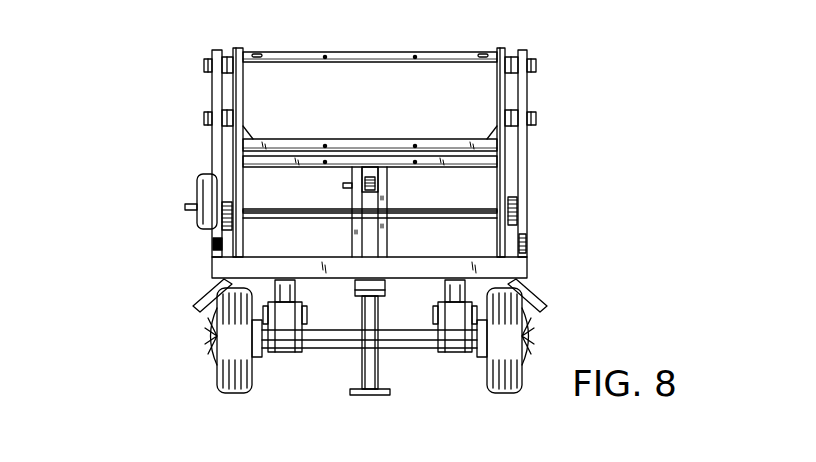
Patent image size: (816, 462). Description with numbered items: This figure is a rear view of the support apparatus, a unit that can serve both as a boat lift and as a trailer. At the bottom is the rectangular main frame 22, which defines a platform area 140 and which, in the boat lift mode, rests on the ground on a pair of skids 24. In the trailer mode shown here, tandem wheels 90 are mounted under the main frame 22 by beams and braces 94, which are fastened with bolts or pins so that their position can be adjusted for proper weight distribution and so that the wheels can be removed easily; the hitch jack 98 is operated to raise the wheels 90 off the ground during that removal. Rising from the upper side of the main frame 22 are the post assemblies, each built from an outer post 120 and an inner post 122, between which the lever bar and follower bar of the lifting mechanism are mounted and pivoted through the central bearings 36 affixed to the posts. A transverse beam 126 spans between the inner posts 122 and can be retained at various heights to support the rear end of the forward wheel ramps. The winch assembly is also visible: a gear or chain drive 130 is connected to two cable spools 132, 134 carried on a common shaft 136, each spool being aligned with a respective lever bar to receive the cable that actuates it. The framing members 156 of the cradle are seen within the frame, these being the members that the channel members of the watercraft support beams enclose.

The main frame 22 is at (432, 253).
The skids 24 is at (545, 296).
The central bearings 36 is at (204, 62).
The tandem wheels 90 is at (217, 383).
The beams and braces 94 is at (272, 352).
The hitch jack 98 is at (385, 372).
The outer post 120 is at (212, 90).
The inner post 122 is at (241, 110).
The transverse beam 126 is at (337, 52).
The gear or chain drive 130 is at (197, 200).
The cable spool 132 is at (215, 245).
The cable spool 134 is at (513, 193).
The common shaft 136 is at (473, 208).
The platform area 140 is at (527, 265).
The framing members 156 is at (392, 139).